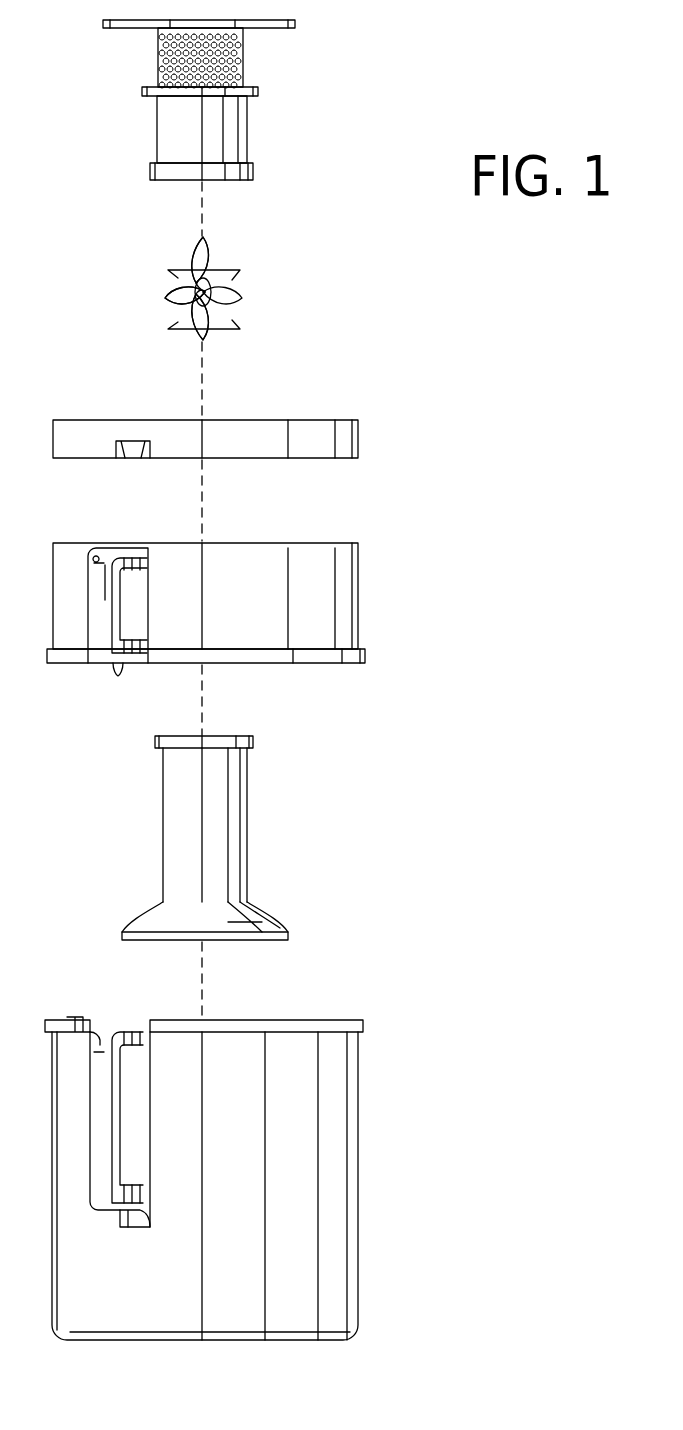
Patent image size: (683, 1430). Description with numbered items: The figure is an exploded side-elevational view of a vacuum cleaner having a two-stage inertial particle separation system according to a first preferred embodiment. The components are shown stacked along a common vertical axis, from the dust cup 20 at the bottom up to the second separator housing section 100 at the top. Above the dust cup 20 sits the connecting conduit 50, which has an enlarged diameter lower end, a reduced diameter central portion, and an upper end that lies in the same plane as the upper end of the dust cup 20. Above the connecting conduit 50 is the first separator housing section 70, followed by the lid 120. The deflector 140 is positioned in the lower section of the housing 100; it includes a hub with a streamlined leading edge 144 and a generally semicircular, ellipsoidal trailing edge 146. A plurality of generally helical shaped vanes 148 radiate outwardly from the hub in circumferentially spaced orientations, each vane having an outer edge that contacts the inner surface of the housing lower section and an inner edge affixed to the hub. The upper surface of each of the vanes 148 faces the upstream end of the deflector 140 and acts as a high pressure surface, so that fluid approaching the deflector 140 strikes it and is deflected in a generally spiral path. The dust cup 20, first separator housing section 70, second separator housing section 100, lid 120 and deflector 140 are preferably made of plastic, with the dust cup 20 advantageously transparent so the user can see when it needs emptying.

The dust cup 20 is at (363, 1102).
The connecting conduit 50 is at (251, 812).
The first separator housing section 70 is at (363, 596).
The second separator housing section 100 is at (249, 114).
The lid 120 is at (363, 428).
The deflector 140 is at (239, 294).
The leading edge 144 is at (208, 255).
The trailing edge 146 is at (207, 333).
The helical shaped vanes 148 is at (170, 297).